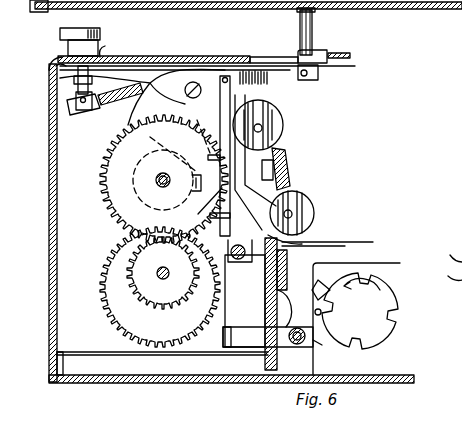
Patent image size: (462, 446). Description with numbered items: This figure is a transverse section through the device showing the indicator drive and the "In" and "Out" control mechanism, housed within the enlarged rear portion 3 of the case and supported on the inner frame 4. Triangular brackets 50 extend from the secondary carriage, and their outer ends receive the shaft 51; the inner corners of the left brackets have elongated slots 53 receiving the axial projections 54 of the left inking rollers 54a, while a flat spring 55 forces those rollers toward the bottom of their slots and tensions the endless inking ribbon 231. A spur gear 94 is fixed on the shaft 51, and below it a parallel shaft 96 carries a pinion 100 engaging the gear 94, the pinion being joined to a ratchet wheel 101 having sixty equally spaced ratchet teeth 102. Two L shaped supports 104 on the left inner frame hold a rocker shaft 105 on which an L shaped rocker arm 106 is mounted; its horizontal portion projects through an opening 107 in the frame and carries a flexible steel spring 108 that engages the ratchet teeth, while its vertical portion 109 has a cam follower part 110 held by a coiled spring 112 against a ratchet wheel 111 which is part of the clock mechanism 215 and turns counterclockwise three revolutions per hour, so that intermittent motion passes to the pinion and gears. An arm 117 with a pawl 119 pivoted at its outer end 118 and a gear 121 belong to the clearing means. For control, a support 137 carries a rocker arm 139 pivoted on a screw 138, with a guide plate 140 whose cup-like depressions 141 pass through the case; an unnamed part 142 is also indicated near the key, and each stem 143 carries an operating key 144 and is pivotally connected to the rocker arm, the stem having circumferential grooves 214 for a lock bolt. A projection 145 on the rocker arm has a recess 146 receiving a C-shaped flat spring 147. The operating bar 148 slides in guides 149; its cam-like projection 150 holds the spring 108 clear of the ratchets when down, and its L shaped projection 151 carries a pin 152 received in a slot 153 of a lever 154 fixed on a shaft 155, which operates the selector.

The enlarged rear portion 3 is at (173, 56).
The inner frame 4 is at (266, 292).
The bracket 50 is at (159, 213).
The shaft 51 is at (154, 184).
The elongated slot 53 is at (278, 128).
The axial projection 54 is at (297, 200).
The left inking roller 54a is at (283, 146).
The flat spring 55 is at (289, 163).
The spur gear 94 is at (105, 207).
The shaft 96 is at (169, 273).
The pinion 100 is at (145, 264).
The ratchet wheel 101 is at (153, 323).
The ratchet teeth 102 is at (100, 297).
The L shaped support 104 is at (316, 302).
The rocker shaft 105 is at (316, 353).
The rocker arm 106 is at (300, 347).
The opening 107 is at (275, 293).
The flexible steel spring 108 is at (227, 311).
The vertical portion 109 is at (320, 315).
The cam follower part 110 is at (396, 306).
The ratchet wheel 111 is at (399, 303).
The spring 112 is at (292, 335).
The arm 117 is at (461, 296).
The outer end 118 is at (461, 266).
The pawl 119 is at (461, 284).
The gear 121 is at (449, 366).
The support 137 is at (232, 106).
The screw 138 is at (170, 100).
The rocker arm 139 is at (147, 88).
The guide plate 140 is at (246, 37).
The cup-like depression 141 is at (100, 57).
The adjusting rod 142 is at (298, 52).
The stem 143 is at (78, 92).
The operating key 144 is at (72, 33).
The projection 145 is at (193, 136).
The recess 146 is at (153, 138).
The flat spring 147 is at (144, 167).
The operating bar 148 is at (198, 208).
The guide 149 is at (197, 177).
The cam-like projection 150 is at (180, 258).
The L shaped projection 151 is at (300, 246).
The pin 152 is at (280, 212).
The slot 153 is at (231, 264).
The lever 154 is at (227, 297).
The shaft 155 is at (226, 248).
The circumferential groove 214 is at (56, 66).
The clock mechanism 215 is at (400, 263).
The inking ribbon 231 is at (280, 105).